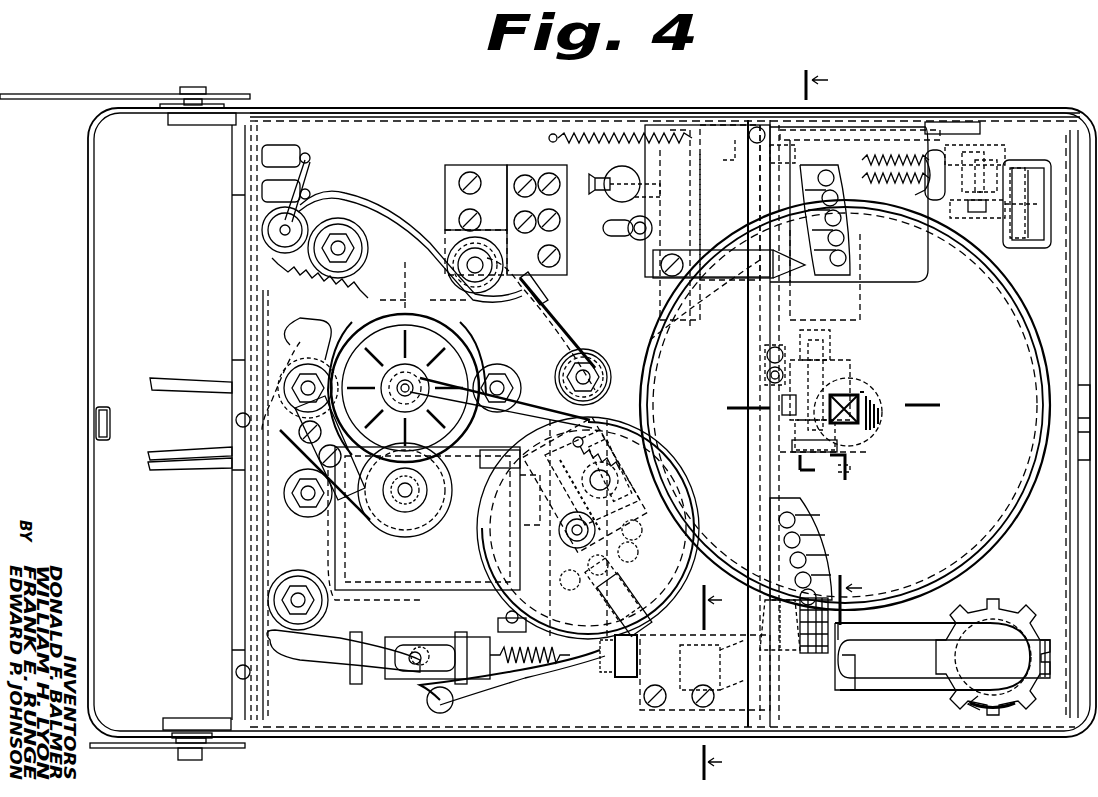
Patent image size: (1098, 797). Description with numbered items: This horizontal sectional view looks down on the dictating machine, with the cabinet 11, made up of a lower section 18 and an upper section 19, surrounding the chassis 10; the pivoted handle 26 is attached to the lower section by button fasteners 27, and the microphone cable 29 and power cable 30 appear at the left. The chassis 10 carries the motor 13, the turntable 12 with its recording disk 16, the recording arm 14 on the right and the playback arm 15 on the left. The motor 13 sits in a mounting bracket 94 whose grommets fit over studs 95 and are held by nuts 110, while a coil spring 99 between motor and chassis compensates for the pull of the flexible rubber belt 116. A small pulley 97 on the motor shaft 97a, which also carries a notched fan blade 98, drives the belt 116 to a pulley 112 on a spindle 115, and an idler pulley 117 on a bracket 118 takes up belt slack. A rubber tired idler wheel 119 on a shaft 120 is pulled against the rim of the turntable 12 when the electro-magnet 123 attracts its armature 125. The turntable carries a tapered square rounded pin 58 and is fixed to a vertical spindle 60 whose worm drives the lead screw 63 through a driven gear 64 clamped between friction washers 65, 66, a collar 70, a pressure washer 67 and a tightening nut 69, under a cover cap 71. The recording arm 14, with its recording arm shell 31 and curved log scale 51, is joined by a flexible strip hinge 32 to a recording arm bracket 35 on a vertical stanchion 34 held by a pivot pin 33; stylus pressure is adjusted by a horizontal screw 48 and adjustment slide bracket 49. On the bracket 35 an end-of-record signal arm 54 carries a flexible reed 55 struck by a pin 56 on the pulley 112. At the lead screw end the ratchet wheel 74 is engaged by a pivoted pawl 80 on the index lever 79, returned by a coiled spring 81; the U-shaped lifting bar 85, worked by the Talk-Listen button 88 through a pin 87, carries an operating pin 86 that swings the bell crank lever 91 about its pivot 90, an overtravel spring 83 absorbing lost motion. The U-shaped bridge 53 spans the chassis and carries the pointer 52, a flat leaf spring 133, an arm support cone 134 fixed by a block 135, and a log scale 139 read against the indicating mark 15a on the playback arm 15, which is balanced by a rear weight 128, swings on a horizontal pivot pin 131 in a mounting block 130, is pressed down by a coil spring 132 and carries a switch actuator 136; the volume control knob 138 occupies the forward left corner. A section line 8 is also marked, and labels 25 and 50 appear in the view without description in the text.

The section line 8- 8 is at (842, 346).
The chassis 10 is at (428, 117).
The cabinet 11 is at (86, 248).
The turntable 12 is at (1005, 538).
The motor 13 is at (300, 322).
The recording arm 14 is at (928, 272).
The playback arm 15 is at (900, 690).
The indicating mark 15a is at (875, 686).
The recording disk 16 is at (1008, 505).
The lower section 18 is at (388, 112).
The upper section 19 is at (727, 682).
The knob 25 is at (96, 422).
The pivoted handle 26 is at (68, 92).
The button fasteners 27 is at (192, 88).
The cable 29 is at (172, 380).
The power cable 30 is at (160, 468).
The recording arm shell 31 is at (545, 160).
The flexible strip hinge 32 is at (518, 162).
The pivot pin 33 is at (458, 252).
The vertical stanchion 34 is at (455, 264).
The recording arm bracket 35 is at (495, 160).
The horizontal screw 48 is at (592, 176).
The adjustment slide bracket 49 is at (614, 200).
The stop 50 is at (632, 238).
The curved log scale 51 is at (860, 254).
The pointer 52 is at (772, 278).
The U-shaped bridge 53 is at (770, 308).
The end-of-record signal arm 54 is at (548, 300).
The flexible reed 55 is at (558, 318).
The pin 56 is at (575, 446).
The tapered square rounded pin 58 is at (865, 398).
The vertical spindle 60 is at (860, 392).
The lead screw 63 is at (866, 310).
The driven gear 64 is at (782, 400).
The friction washer 65 is at (766, 374).
The friction washer 66 is at (790, 418).
The pressure washer 67 is at (792, 438).
The tightening nut 69 is at (790, 462).
The collar 70 is at (766, 355).
The cover cap 71 is at (860, 458).
The ratchet wheel 74 is at (845, 138).
The index lever 79 is at (955, 122).
The pivoted pawl 80 is at (738, 160).
The coiled spring 81 is at (630, 135).
The overtravel spring 83 is at (918, 155).
The U-shaped lifting bar 85 is at (1000, 210).
The operating pin 86 is at (975, 152).
The pin 87 is at (1030, 165).
The Talk-Listen button 88 is at (1026, 248).
The pivot 90 is at (990, 160).
The bell crank lever 91 is at (1018, 168).
The mounting bracket 94 is at (286, 340).
The studs 95 is at (352, 252).
The pulley 97 is at (440, 350).
The motor shaft 97a is at (438, 370).
The notched fan blade 98 is at (432, 330).
The coil spring 99 is at (290, 292).
The nut 110 is at (350, 262).
The pulley 112 is at (470, 576).
The spindle 115 is at (568, 544).
The flexible rubber belt 116 is at (470, 490).
The idler pulley 117 is at (400, 520).
The bracket 118 is at (300, 448).
The rubber tired idler wheel 119 is at (640, 488).
The shaft 120 is at (625, 480).
The electro-magnet 123 is at (548, 610).
The armature 125 is at (562, 622).
The rear weight 128 is at (302, 665).
The mounting block 130 is at (412, 680).
The horizontal pivot pin 131 is at (470, 712).
The coil spring 132 is at (530, 676).
The flat leaf spring 133 is at (636, 678).
The arm support cone 134 is at (760, 610).
The block 135 is at (650, 712).
The switch actuator 136 is at (496, 622).
The volume control knob 138 is at (1022, 606).
The log scale 139 is at (815, 556).